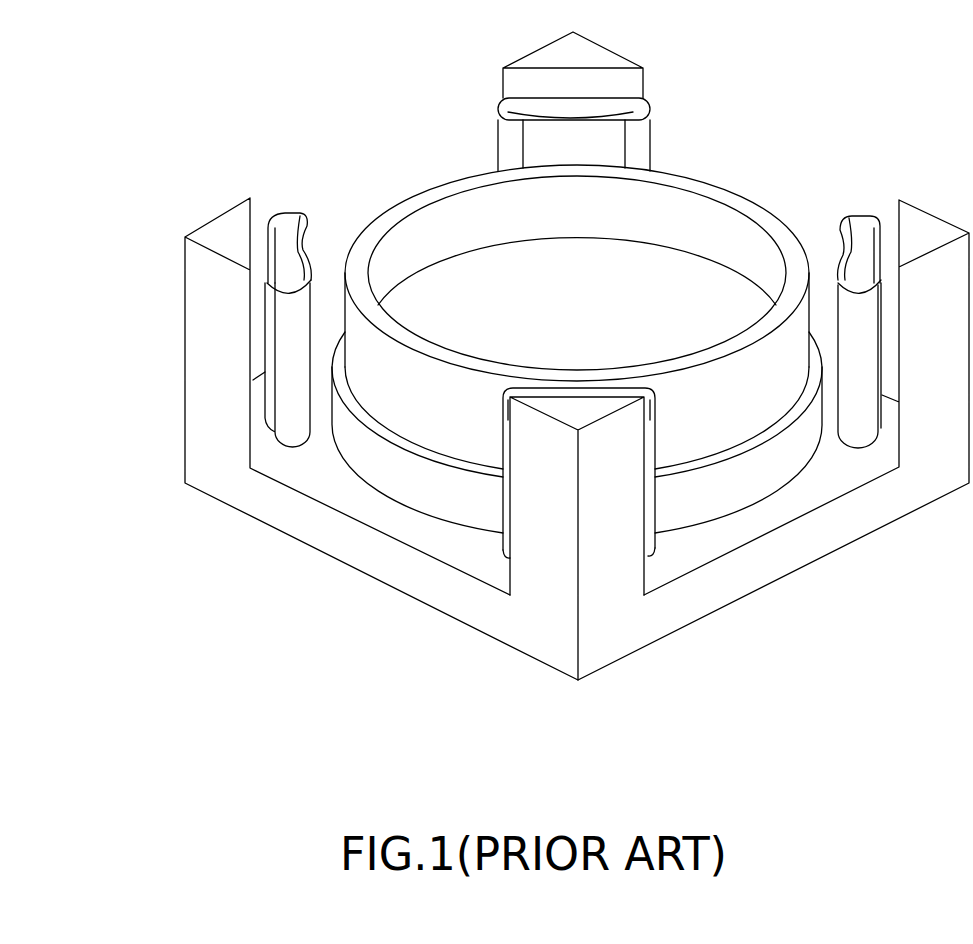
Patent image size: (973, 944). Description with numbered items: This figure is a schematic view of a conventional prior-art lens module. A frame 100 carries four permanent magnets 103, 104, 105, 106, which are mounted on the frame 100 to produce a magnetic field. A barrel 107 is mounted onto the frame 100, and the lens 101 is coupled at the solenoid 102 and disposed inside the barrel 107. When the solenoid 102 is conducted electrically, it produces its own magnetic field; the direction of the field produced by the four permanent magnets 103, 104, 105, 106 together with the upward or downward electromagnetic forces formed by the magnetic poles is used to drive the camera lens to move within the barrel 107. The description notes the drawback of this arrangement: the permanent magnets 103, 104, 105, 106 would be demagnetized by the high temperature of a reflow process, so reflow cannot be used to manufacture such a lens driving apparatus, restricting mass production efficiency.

The frame 100 is at (195, 268).
The lens 101 is at (524, 275).
The solenoid 102 is at (757, 212).
The permanent magnet 103 is at (858, 228).
The permanent magnet 104 is at (643, 108).
The permanent magnet 105 is at (293, 220).
The permanent magnet 106 is at (655, 537).
The barrel 107 is at (393, 475).